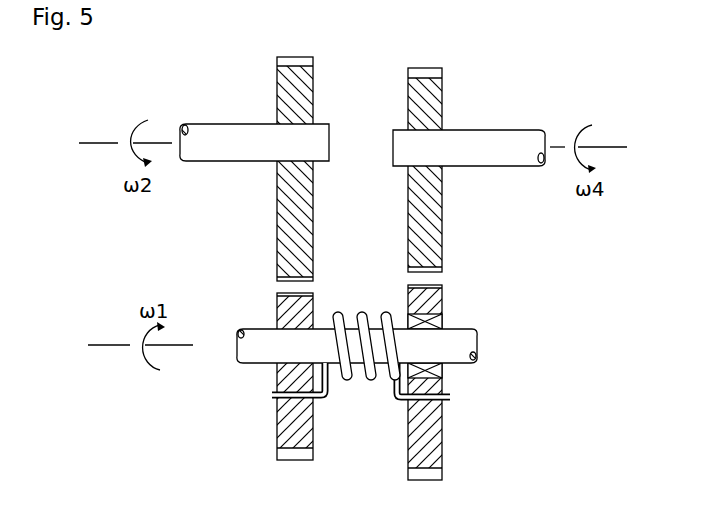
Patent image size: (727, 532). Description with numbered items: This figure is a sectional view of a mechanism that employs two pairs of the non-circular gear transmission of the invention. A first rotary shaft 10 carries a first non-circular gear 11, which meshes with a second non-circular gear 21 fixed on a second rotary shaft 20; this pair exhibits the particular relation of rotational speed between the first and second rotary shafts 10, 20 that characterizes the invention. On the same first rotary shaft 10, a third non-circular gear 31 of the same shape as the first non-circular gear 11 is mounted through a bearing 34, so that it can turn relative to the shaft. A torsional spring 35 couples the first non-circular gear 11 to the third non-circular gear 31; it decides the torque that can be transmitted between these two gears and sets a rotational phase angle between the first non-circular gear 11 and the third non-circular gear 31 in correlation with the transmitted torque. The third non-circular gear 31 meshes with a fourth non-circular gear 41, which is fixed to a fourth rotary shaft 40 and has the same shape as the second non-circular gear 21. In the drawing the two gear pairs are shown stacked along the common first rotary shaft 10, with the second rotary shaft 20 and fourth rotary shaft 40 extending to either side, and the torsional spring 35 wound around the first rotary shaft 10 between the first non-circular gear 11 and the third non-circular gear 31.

The first rotary shaft 10 is at (272, 350).
The first non-circular gear 11 is at (283, 420).
The second rotary shaft 20 is at (218, 136).
The second non-circular gear 21 is at (288, 105).
The third non-circular gear 31 is at (437, 443).
The bearing 34 is at (438, 372).
The torsional spring 35 is at (357, 378).
The fourth rotary shaft 40 is at (492, 138).
The fourth non-circular gear 41 is at (438, 102).